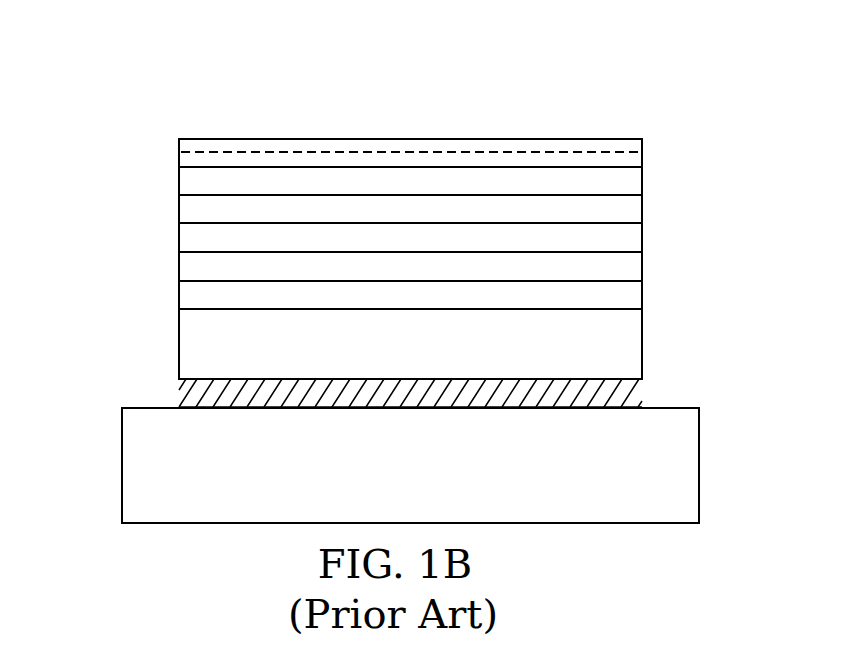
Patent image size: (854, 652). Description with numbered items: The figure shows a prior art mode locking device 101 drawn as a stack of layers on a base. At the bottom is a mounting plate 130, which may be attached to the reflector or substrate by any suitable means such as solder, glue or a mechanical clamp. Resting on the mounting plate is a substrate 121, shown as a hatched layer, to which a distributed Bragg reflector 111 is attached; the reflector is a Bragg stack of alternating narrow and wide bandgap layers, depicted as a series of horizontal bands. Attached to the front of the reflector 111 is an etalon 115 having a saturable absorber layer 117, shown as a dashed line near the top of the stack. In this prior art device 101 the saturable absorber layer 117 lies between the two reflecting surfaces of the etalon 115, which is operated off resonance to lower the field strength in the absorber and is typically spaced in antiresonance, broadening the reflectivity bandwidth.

The prior art mode locking device 101 is at (290, 75).
The distributed Bragg reflector 111 is at (93, 123).
The etalon 115 is at (612, 138).
The saturable absorber layer 117 is at (193, 152).
The substrate 121 is at (424, 360).
The mounting plate 130 is at (392, 473).